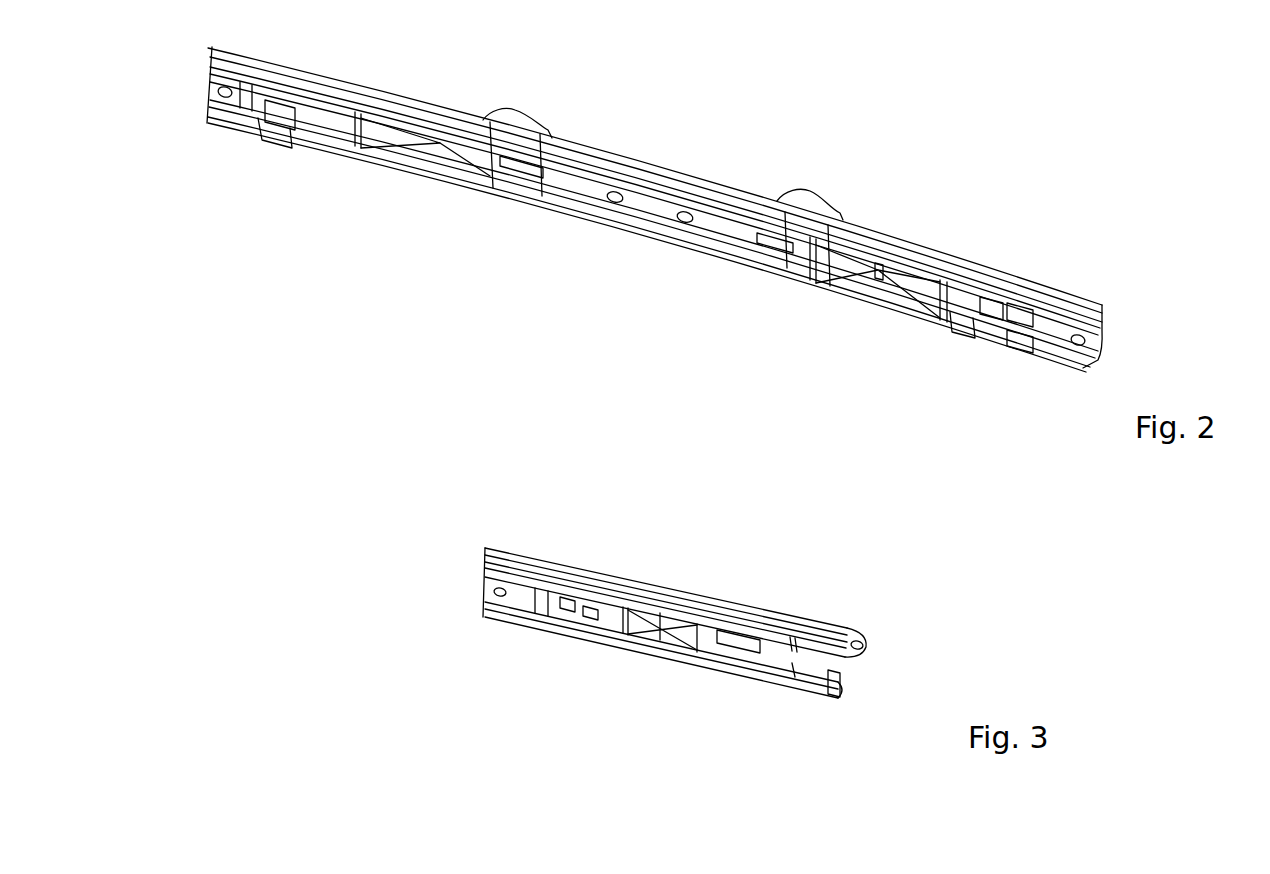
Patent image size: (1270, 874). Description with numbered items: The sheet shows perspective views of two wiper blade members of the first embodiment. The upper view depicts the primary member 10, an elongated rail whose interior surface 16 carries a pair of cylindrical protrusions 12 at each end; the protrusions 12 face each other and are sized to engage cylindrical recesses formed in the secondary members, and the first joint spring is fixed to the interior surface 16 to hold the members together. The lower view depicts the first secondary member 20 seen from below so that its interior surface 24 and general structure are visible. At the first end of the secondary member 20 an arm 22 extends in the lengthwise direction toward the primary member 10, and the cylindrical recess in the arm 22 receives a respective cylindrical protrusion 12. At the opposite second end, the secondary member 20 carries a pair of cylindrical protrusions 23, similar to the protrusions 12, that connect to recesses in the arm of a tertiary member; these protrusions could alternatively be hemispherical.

In FIG. 2, the primary member 10 is at (680, 165).
In FIG. 2, the cylindrical protrusions 12 is at (208, 110).
In FIG. 2, the interior surface 16 is at (267, 137).
In FIG. 3, the first secondary member 20 is at (482, 560).
In FIG. 3, the arm 22 is at (873, 638).
In FIG. 3, the cylindrical protrusions 23 is at (497, 642).
In FIG. 3, the interior surface 24 is at (565, 640).